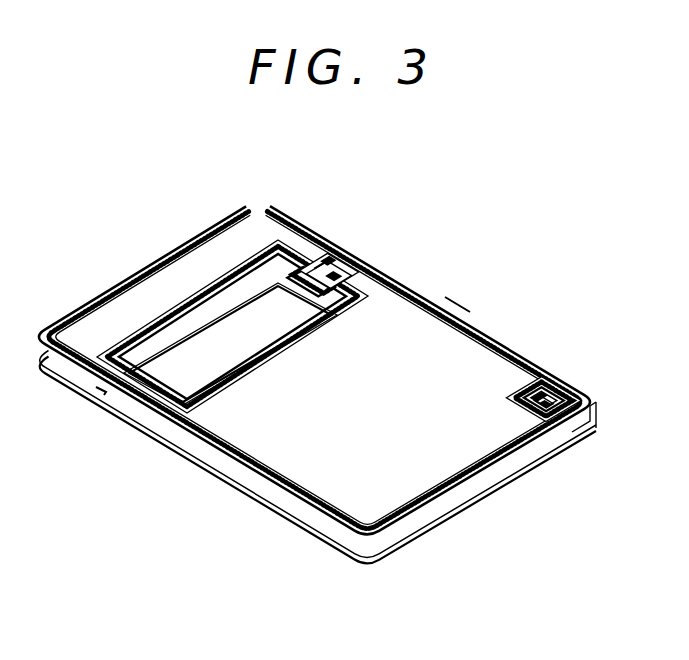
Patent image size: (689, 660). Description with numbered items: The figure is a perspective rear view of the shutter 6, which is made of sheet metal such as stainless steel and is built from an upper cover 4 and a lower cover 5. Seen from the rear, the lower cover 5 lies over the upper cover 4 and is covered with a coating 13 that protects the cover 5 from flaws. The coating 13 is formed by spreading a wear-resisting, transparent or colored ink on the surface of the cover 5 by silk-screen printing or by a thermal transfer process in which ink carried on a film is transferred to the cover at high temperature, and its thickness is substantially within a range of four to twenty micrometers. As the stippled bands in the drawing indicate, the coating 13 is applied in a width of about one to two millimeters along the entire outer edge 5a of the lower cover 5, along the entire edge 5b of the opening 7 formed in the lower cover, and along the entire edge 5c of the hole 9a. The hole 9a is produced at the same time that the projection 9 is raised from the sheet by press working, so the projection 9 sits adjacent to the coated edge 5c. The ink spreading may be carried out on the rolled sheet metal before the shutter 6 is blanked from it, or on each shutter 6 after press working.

The upper cover 4 is at (417, 540).
The lower cover 5 is at (458, 487).
The outer edge of the lower cover 5a is at (72, 311).
The edge of the opening 5b is at (330, 305).
The edge of the hole 5c is at (522, 404).
The shutter 6 is at (443, 298).
The opening 7 is at (213, 300).
The projection 9 is at (333, 256).
The hole 9a is at (530, 402).
The coating 13 is at (154, 313).